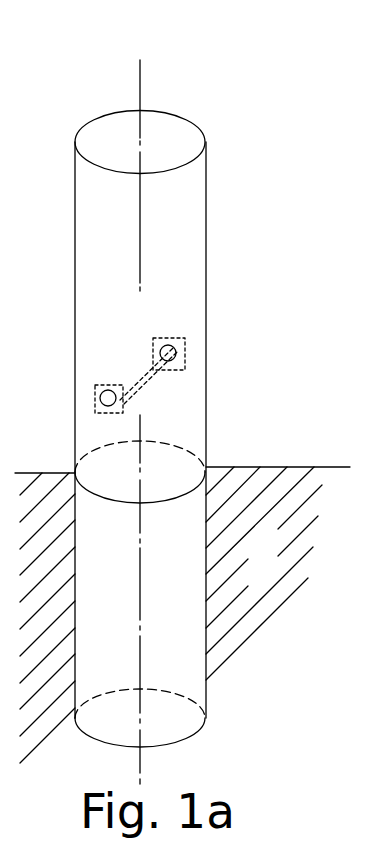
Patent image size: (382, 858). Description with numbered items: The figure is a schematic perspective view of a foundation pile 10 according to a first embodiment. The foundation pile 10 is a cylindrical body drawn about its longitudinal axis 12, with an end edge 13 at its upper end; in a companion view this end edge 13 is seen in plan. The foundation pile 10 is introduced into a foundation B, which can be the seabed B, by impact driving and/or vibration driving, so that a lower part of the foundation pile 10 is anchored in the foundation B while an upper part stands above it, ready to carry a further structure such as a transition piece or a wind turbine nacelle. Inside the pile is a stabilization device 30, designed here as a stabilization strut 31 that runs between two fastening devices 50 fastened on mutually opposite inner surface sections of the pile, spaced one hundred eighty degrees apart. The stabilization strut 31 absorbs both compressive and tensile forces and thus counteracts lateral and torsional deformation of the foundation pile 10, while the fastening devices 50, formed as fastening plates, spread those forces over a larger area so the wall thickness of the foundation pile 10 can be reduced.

The foundation pile 10 is at (211, 405).
The longitudinal axis 12 is at (142, 77).
The end edge 13 is at (195, 121).
The stabilization device 30 is at (217, 312).
The stabilization strut 31 is at (144, 370).
The fastening device 50 is at (185, 363).
The foundation B is at (182, 615).